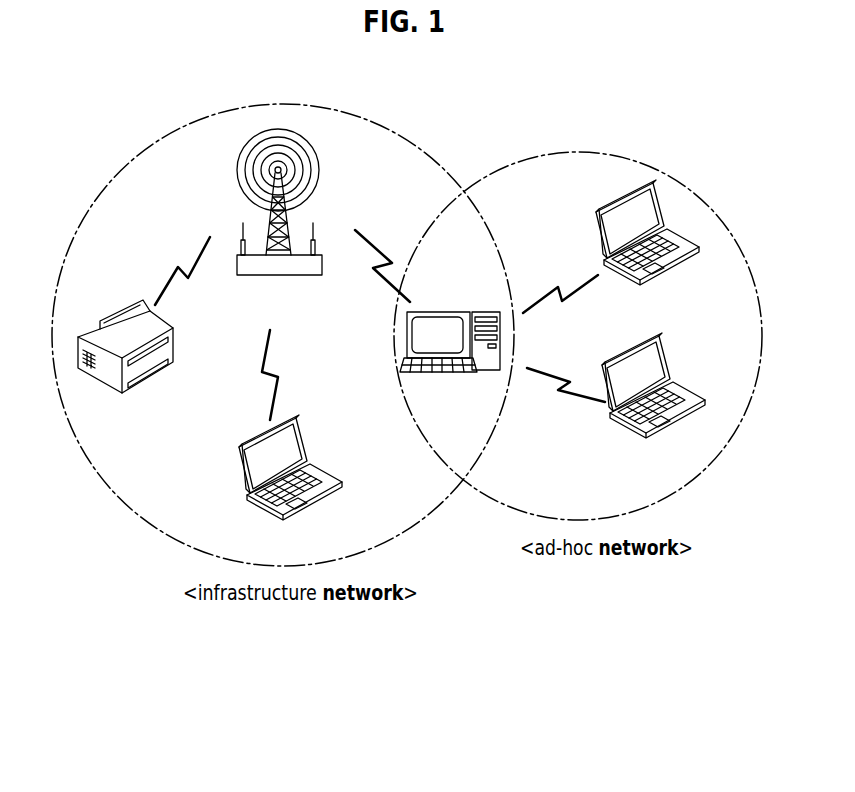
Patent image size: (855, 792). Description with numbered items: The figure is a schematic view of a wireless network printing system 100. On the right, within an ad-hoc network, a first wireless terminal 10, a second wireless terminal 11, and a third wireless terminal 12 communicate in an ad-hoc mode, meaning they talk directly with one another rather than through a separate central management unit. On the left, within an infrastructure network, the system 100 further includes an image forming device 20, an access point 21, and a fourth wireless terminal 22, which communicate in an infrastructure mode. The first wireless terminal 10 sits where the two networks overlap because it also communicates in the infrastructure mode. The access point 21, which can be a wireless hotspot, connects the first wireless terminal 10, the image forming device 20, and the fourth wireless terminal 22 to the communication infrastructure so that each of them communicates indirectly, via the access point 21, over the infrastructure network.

The wireless network printing system 100 is at (363, 650).
The first wireless terminal 10 is at (443, 322).
The second wireless terminal 11 is at (617, 368).
The third wireless terminal 12 is at (611, 220).
The image forming device 20 is at (137, 312).
The access point 21 is at (305, 188).
The fourth wireless terminal 22 is at (256, 452).